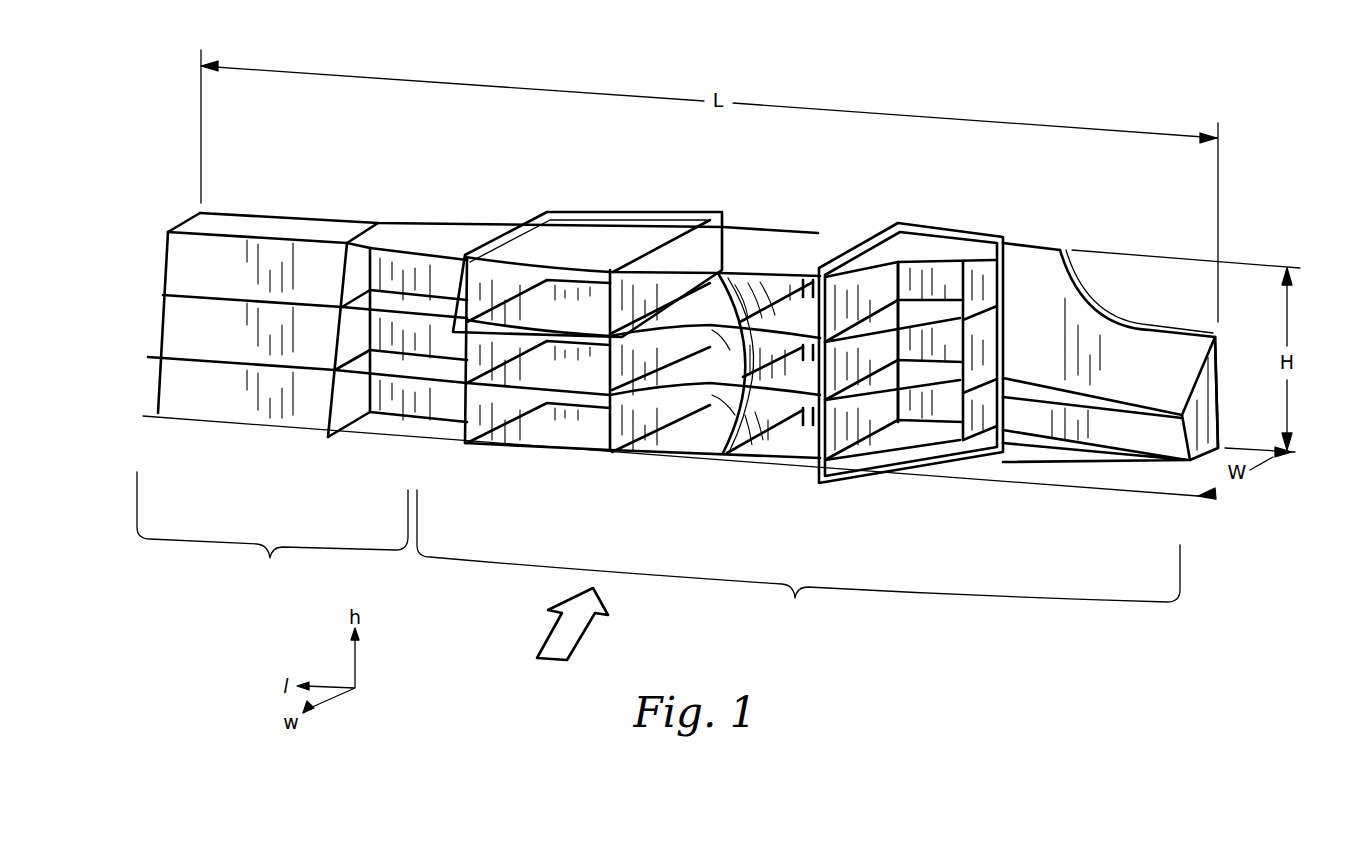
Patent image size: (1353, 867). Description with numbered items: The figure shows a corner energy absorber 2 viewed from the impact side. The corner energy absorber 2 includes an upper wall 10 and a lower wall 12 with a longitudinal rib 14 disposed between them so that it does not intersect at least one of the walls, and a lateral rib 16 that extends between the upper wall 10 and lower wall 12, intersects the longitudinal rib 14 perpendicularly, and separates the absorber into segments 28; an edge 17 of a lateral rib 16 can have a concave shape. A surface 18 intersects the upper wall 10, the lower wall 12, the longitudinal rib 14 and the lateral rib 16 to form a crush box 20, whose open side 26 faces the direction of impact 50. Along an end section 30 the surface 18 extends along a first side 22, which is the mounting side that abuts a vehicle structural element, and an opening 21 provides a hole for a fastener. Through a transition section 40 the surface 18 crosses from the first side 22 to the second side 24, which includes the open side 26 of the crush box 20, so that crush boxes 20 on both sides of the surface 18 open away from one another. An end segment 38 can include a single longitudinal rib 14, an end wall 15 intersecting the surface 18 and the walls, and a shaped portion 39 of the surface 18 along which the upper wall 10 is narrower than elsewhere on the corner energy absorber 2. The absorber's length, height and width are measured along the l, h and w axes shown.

The corner energy absorber 2 is at (1012, 100).
The upper wall 10 is at (742, 245).
The lower wall 12 is at (878, 448).
The longitudinal rib 14 is at (914, 310).
The end wall 15 is at (1205, 384).
The lateral rib 16 is at (640, 413).
The edge 17 is at (733, 430).
The surface 18 is at (1040, 333).
The crush box 20 is at (612, 211).
The opening 21 is at (740, 322).
The first side 22 is at (772, 220).
The second side 24 is at (378, 455).
The open side 26 is at (403, 276).
The segment 28 is at (960, 232).
The end section 30 is at (798, 557).
The end segment 38 is at (1122, 365).
The shaped portion 39 is at (1088, 293).
The transition section 40 is at (272, 530).
The direction of impact 50 is at (560, 637).